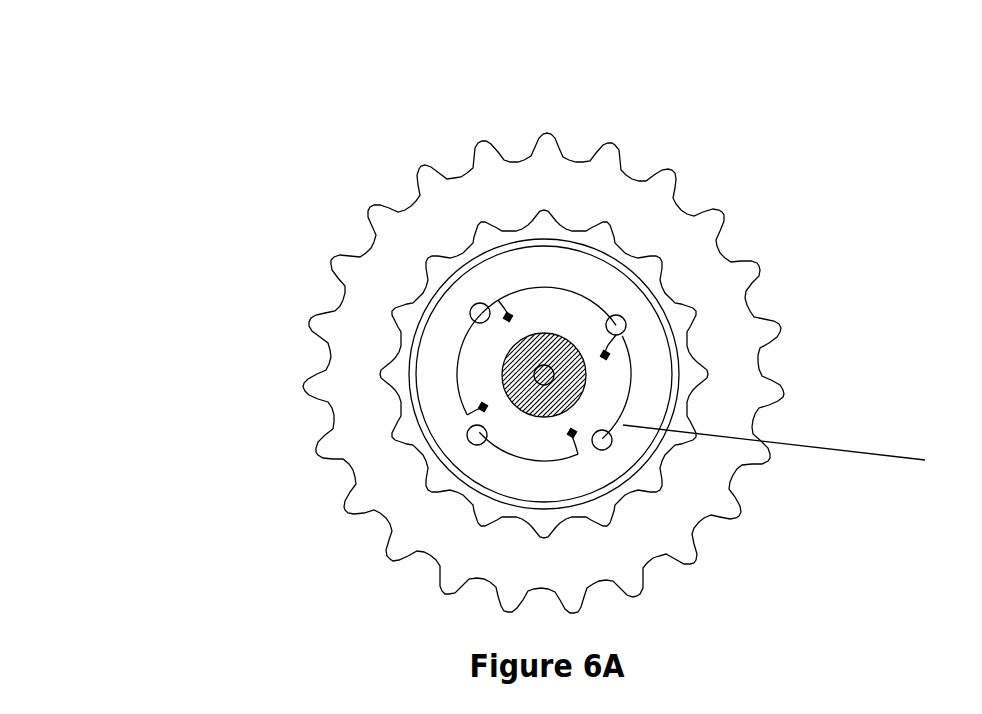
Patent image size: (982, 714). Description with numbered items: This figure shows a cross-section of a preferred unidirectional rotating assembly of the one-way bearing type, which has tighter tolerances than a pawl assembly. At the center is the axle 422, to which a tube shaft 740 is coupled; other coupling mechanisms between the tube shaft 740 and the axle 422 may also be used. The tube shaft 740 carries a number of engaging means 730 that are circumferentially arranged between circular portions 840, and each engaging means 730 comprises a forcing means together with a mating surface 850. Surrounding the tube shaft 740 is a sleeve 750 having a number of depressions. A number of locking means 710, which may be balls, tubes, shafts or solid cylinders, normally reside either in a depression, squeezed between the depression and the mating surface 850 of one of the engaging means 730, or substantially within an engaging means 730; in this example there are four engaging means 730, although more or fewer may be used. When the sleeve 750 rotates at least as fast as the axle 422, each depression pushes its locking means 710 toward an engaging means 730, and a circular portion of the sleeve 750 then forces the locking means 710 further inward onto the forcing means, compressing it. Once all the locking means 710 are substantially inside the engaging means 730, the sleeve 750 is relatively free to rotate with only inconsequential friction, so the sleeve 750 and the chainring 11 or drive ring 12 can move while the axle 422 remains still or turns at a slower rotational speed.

The chainring 11 is at (373, 263).
The drive ring 12 is at (380, 372).
The axle 422 is at (586, 384).
The locking means 710 is at (470, 307).
The engaging means 730 is at (895, 296).
The tube shaft 740 is at (543, 313).
The sleeve 750 is at (502, 277).
The circular portions 840 is at (548, 300).
The mating surface 850 is at (470, 320).